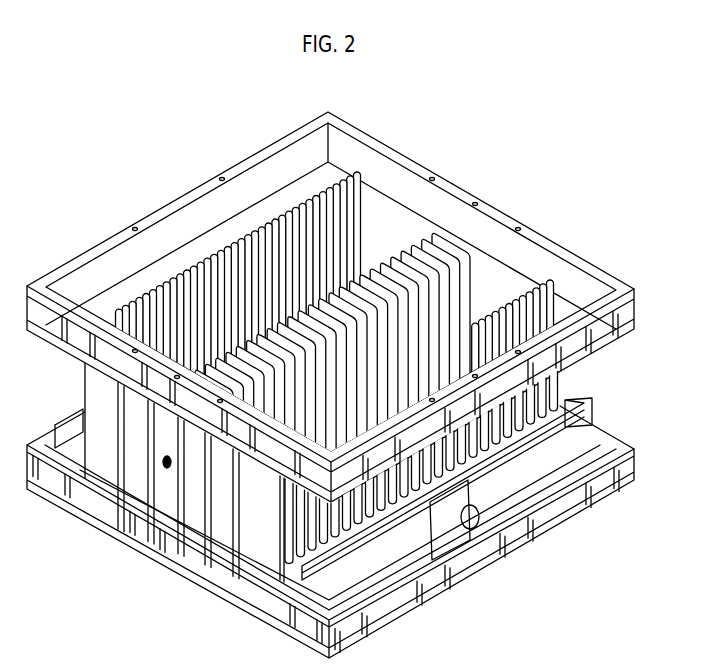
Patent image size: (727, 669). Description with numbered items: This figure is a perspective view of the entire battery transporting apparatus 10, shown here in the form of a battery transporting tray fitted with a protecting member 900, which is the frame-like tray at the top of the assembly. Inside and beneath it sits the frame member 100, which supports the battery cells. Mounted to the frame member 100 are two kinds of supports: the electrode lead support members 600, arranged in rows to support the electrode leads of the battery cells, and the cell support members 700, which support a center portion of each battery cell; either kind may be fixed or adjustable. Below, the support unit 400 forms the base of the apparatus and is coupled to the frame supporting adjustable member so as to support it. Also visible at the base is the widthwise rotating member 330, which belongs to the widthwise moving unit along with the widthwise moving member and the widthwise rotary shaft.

The battery transporting apparatus 10 is at (128, 101).
The frame member 100 is at (567, 413).
The widthwise rotating member 330 is at (173, 574).
The support unit 400 is at (568, 462).
The electrode lead support member 600 is at (357, 173).
The cell support member 700 is at (450, 241).
The protecting member 900 is at (408, 156).